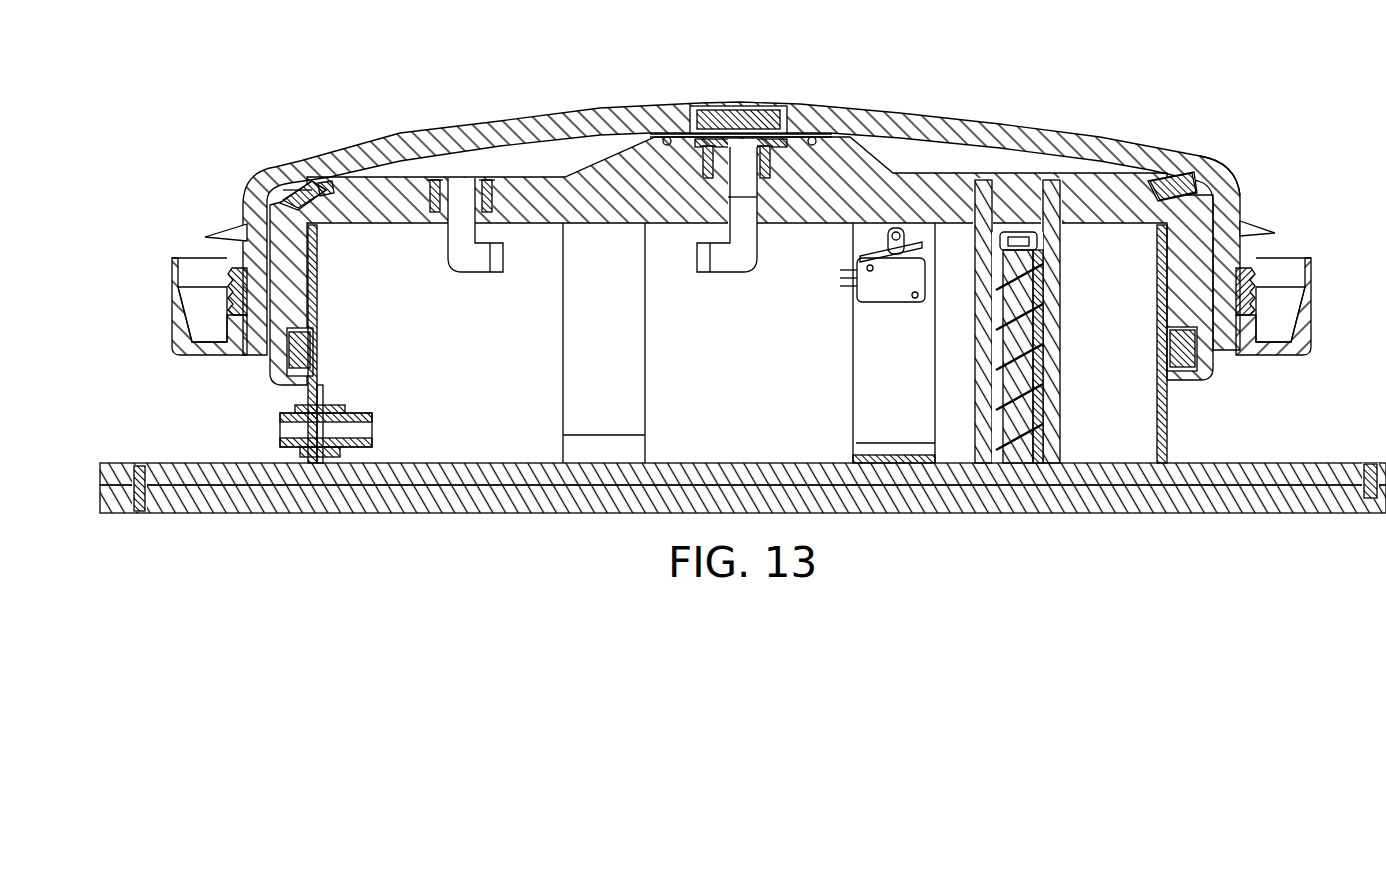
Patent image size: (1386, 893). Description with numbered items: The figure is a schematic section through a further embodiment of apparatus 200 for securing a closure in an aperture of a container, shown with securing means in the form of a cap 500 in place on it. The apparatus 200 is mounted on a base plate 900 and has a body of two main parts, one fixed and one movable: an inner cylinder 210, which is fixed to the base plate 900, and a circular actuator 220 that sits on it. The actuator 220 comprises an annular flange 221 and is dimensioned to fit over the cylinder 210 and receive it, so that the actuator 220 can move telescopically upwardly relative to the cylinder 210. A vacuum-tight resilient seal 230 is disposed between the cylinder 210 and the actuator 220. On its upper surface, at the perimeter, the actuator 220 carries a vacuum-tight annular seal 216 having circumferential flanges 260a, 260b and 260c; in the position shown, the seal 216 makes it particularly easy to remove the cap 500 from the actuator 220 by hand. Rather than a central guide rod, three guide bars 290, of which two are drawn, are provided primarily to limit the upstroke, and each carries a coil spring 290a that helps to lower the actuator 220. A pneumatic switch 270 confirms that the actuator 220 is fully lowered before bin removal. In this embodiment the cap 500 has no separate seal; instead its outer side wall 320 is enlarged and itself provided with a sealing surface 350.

The apparatus 200 is at (707, 245).
The cap 500 is at (896, 120).
The annular seal 216 is at (1200, 170).
The circular actuator 220 is at (1072, 170).
The annular flange 221 is at (1212, 332).
The resilient seal 230 is at (1170, 342).
The inner cylinder 210 is at (1167, 428).
The circumferential flange 260a is at (292, 184).
The circumferential flange 260b is at (297, 172).
The circumferential flange 260c is at (327, 177).
The guide bar 290 is at (576, 356).
The coil spring 290a is at (1040, 342).
The pneumatic switch 270 is at (872, 300).
The outer side wall 320 is at (175, 330).
The sealing surface 350 is at (205, 330).
The base plate 900 is at (1258, 498).